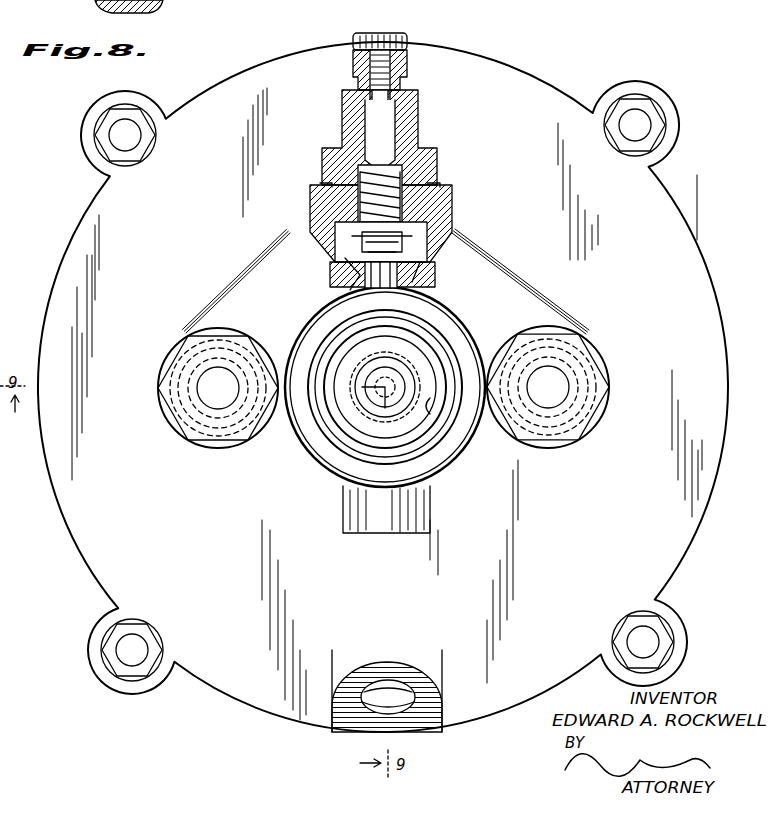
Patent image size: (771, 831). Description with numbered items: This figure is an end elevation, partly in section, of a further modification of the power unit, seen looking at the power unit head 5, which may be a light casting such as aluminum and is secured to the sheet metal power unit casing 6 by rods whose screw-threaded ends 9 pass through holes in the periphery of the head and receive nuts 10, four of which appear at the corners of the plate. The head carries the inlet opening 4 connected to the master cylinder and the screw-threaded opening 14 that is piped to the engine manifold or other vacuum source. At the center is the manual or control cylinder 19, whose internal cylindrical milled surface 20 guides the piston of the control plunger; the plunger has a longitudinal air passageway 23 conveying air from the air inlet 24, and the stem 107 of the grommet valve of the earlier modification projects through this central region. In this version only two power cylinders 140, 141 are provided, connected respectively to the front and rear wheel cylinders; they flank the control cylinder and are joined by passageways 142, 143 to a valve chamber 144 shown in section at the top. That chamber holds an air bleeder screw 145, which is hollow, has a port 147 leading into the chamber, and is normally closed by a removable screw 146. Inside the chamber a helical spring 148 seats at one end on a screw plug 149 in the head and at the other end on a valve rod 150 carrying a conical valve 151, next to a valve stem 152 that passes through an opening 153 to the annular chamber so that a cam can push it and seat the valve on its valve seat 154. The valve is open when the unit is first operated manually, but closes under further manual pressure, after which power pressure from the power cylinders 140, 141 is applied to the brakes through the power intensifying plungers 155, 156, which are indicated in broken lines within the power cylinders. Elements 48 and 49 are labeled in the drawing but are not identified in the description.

The inlet opening 4 is at (402, 534).
The power unit head 5 is at (452, 210).
The power unit casing 6 is at (706, 266).
The screw-threaded ends 9 is at (115, 136).
The nuts 10 is at (138, 118).
The screw-threaded opening 14 is at (385, 688).
The control cylinder 19 is at (426, 338).
The internal cylindrical milled surface 20 is at (432, 412).
The longitudinal air passageway 23 is at (383, 370).
The air inlet 24 is at (352, 422).
The bolt hole 48 is at (200, 380).
The bolt hole 49 is at (590, 378).
The stem 107 is at (370, 420).
The power cylinder 140 is at (548, 450).
The power cylinder 141 is at (228, 450).
The passageway 142 is at (458, 262).
The passageway 143 is at (300, 258).
The valve chamber 144 is at (345, 236).
The air bleeder screw 145 is at (406, 88).
The removable screw 146 is at (392, 26).
The port 147 is at (396, 158).
The helical spring 148 is at (362, 176).
The screw plug 149 is at (340, 148).
The valve rod 150 is at (400, 240).
The conical valve 151 is at (330, 266).
The valve stem 152 is at (380, 288).
The opening 153 is at (428, 280).
The valve seat 154 is at (352, 288).
The power intensifying plunger 155 is at (195, 420).
The power intensifying plunger 156 is at (575, 405).